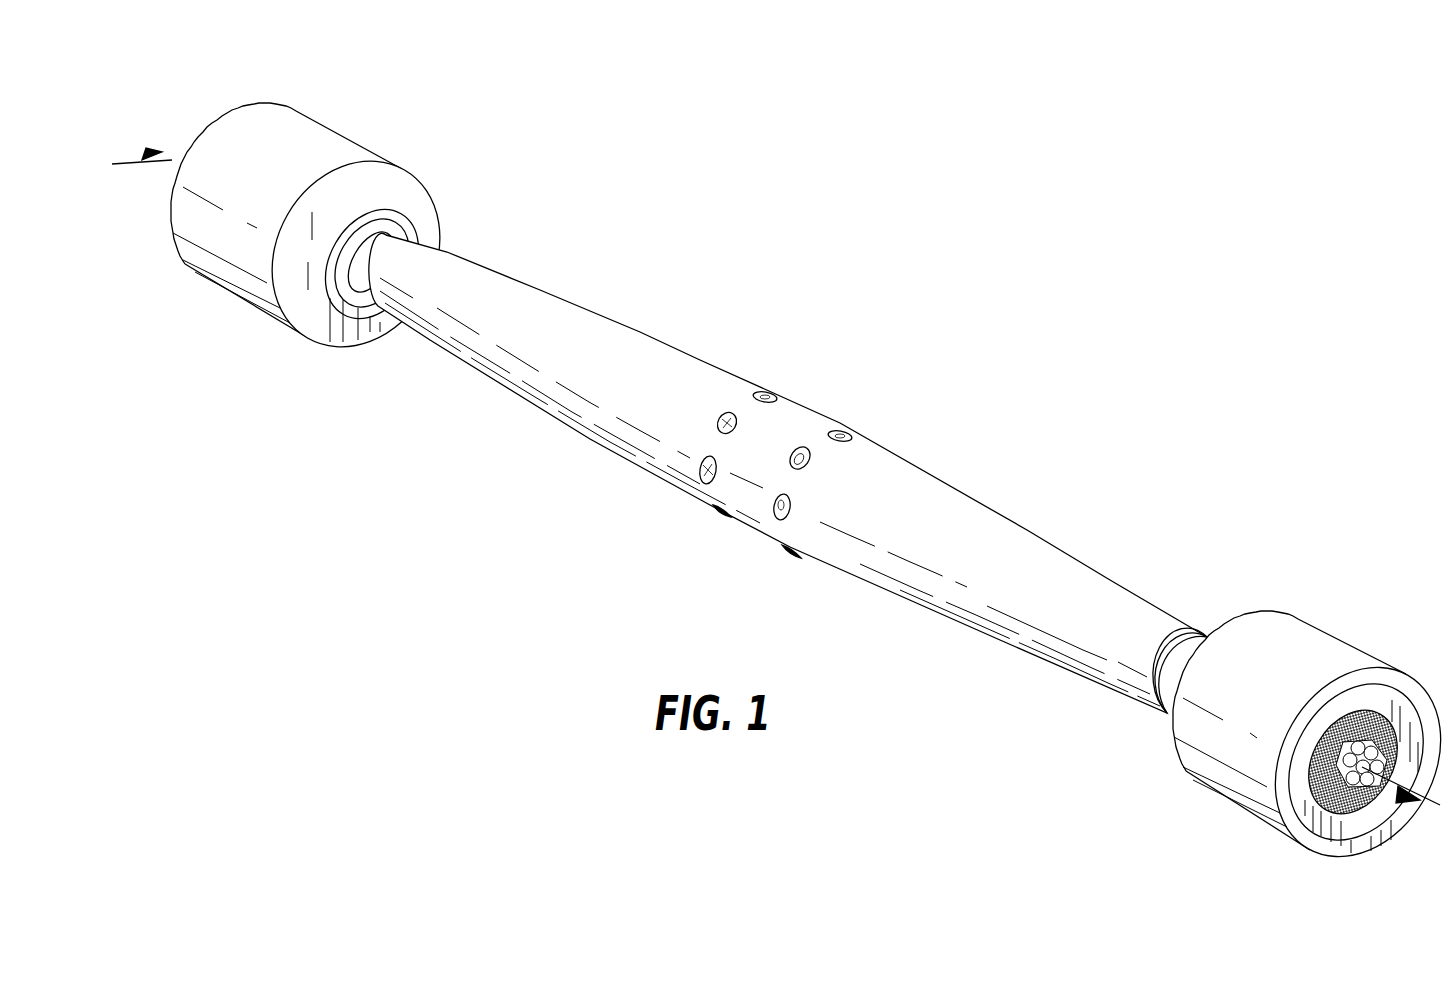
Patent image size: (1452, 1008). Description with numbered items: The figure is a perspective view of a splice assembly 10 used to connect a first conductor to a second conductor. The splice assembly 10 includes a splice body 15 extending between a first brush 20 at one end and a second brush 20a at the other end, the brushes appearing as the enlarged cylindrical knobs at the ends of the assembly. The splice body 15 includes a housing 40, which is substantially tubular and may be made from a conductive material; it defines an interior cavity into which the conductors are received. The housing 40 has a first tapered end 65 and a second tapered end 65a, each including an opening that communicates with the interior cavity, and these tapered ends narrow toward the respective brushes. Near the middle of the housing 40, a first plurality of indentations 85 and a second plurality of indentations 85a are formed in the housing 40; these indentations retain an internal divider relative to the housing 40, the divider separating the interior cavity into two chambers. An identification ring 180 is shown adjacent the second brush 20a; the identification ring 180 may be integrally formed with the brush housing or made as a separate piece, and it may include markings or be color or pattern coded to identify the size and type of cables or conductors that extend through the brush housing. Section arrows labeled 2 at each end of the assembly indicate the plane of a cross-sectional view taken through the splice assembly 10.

The splice assembly 10 is at (811, 475).
The splice body 15 is at (698, 336).
The first brush 20 is at (1307, 645).
The second brush 20a is at (315, 145).
The housing 40 is at (957, 510).
The first tapered end 65 is at (1157, 623).
The second tapered end 65a is at (527, 310).
The first plurality of indentations 85 is at (777, 512).
The second plurality of indentations 85a is at (718, 423).
The identification ring 180 is at (413, 223).
The section line 2- 2 is at (1407, 800).